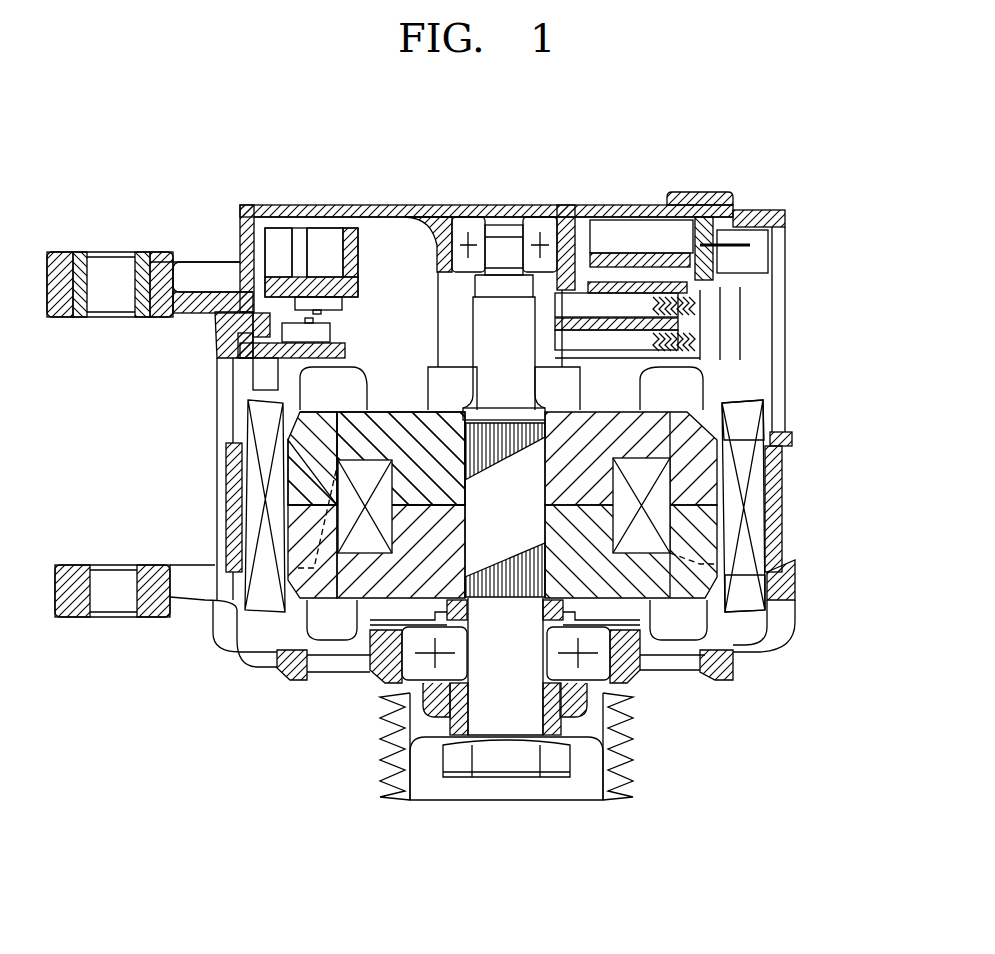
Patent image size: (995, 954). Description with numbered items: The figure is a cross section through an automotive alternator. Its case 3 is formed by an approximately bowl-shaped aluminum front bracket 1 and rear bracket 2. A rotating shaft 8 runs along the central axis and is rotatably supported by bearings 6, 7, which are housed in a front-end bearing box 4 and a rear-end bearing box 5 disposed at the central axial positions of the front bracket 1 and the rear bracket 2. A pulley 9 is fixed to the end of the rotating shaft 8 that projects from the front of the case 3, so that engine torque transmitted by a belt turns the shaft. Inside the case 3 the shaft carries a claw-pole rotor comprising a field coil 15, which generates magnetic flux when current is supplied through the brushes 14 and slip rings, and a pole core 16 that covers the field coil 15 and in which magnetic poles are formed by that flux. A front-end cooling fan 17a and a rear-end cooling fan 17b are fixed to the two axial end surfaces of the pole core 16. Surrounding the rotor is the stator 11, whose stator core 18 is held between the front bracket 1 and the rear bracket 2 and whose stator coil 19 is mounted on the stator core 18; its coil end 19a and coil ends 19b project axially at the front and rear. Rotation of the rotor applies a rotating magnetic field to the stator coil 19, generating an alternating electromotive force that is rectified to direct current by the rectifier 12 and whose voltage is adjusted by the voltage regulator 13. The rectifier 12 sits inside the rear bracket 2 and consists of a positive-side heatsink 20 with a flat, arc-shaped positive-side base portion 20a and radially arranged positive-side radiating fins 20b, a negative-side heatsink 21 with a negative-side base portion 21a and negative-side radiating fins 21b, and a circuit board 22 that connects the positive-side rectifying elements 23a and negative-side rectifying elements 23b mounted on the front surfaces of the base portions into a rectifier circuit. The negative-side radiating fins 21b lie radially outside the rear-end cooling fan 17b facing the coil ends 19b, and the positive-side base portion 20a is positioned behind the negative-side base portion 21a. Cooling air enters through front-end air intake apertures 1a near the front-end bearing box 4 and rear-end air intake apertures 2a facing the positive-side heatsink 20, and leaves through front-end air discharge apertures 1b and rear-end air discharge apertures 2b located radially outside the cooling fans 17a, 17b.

The front bracket 1 is at (727, 687).
The front-end air intake apertures 1a is at (340, 660).
The front-end air discharge apertures 1b is at (227, 640).
The rear bracket 2 is at (700, 192).
The rear-end air intake apertures 2a is at (283, 208).
The rear-end air discharge apertures 2b is at (222, 398).
The case 3 is at (743, 670).
The front-end bearing box 4 is at (593, 667).
The rear-end bearing box 5 is at (445, 245).
The bearing 6 is at (617, 712).
The bearing 7 is at (470, 228).
The rotating shaft 8 is at (512, 720).
The pulley 9 is at (623, 783).
The stator 11 is at (811, 506).
The rectifier 12 is at (305, 262).
The voltage regulator 13 is at (592, 347).
The brushes 14 is at (598, 307).
The field coil 15 is at (347, 492).
The pole core 16 is at (330, 566).
The front-end cooling fan 17a is at (320, 632).
The rear-end cooling fan 17b is at (277, 403).
The stator core 18 is at (773, 490).
The stator coil 19 is at (752, 516).
The coil end 19a is at (750, 600).
The coil ends 19b is at (748, 418).
The positive-side heatsink 20 is at (346, 209).
The positive-side base portion 20a is at (322, 280).
The positive-side radiating fins 20b is at (360, 238).
The negative-side heatsink 21 is at (210, 366).
The negative-side base portion 21a is at (257, 347).
The negative-side radiating fins 21b is at (257, 373).
The circuit board 22 is at (250, 322).
The positive-side rectifying elements 23a is at (335, 303).
The negative-side rectifying elements 23b is at (333, 330).